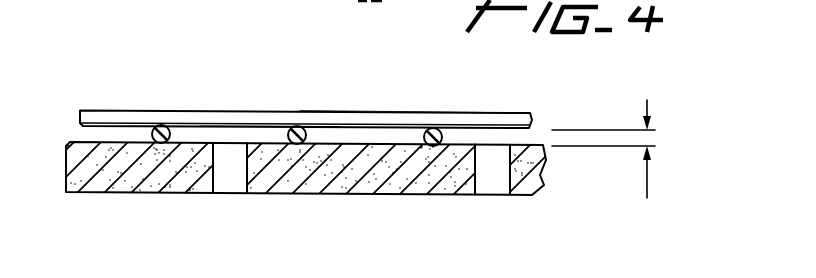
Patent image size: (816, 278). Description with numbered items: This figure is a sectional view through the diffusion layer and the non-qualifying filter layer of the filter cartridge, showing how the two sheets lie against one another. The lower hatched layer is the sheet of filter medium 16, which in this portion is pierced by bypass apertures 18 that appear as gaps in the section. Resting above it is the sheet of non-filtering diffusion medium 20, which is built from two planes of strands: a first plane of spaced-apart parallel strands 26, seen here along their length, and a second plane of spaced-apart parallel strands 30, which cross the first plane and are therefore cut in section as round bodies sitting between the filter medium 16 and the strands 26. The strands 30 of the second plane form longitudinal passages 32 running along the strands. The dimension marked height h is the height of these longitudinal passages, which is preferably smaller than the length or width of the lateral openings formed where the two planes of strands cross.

The filter medium 16 is at (494, 208).
The bypass apertures 18 is at (228, 182).
The diffusion medium 20 is at (548, 110).
The strands 26 is at (421, 117).
The strands 30 is at (166, 128).
The longitudinal passages 32 is at (338, 133).
The height h is at (648, 138).